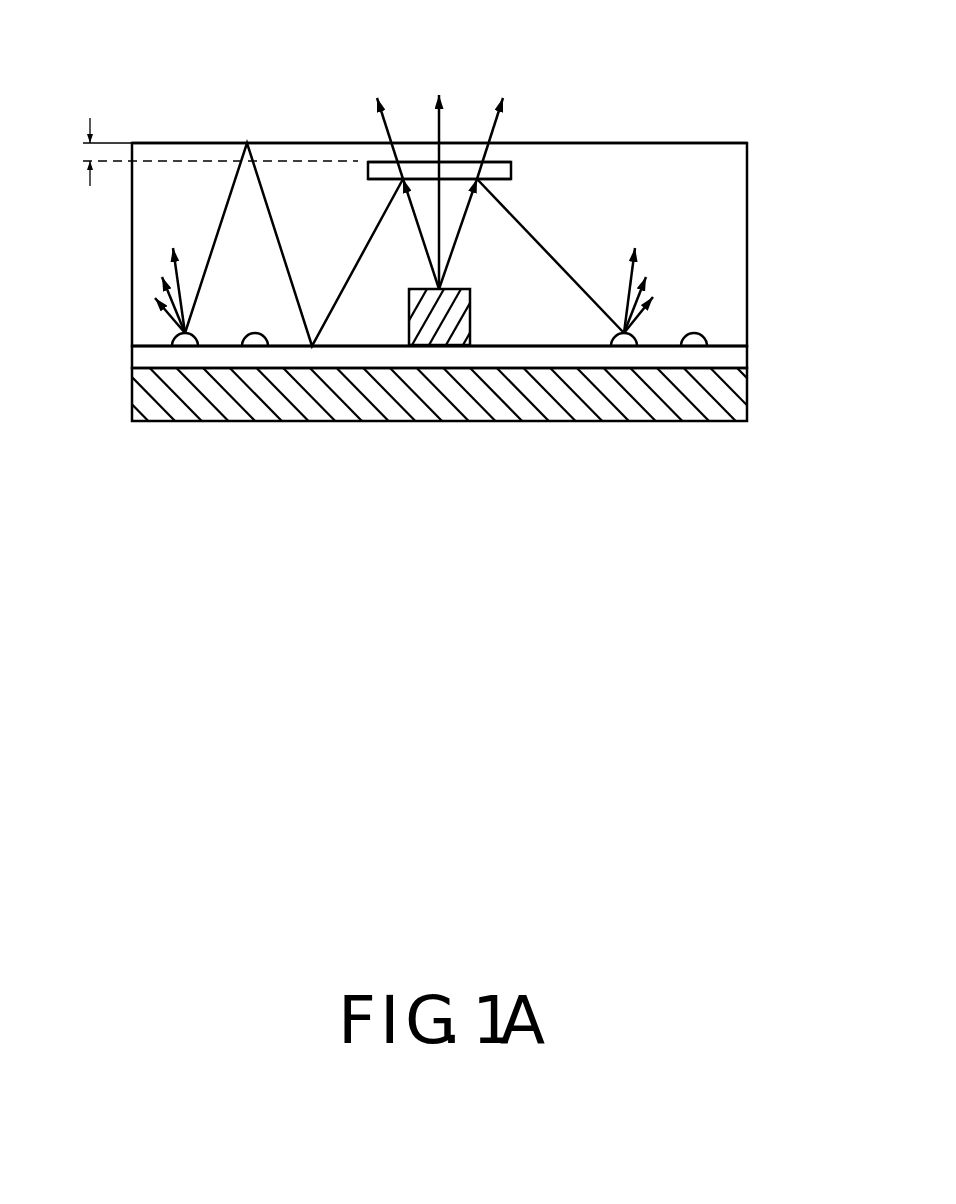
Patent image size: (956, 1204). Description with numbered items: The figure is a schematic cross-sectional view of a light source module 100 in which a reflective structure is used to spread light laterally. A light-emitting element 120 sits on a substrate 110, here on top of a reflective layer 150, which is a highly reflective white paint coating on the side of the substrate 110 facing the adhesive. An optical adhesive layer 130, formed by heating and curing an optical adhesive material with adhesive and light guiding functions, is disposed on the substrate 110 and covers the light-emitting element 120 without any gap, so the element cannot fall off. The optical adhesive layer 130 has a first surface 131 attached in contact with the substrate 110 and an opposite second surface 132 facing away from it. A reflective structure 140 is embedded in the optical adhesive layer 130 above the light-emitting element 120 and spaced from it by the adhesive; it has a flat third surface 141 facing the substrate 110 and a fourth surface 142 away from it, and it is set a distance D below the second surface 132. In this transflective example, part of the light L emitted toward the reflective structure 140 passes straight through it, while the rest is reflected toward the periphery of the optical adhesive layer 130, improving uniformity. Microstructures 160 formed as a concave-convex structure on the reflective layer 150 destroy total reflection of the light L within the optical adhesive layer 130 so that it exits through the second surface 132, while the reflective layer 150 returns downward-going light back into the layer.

The light source module 100 is at (99, 52).
The substrate 110 is at (725, 395).
The light-emitting element 120 is at (437, 346).
The optical adhesive layer 130 is at (725, 163).
The first surface 131 is at (213, 343).
The second surface 132 is at (190, 141).
The reflective structure 140 is at (512, 172).
The third surface 141 is at (506, 184).
The fourth surface 142 is at (502, 161).
The reflective layer 150 is at (725, 355).
The microstructures 160 is at (168, 335).
The light L is at (557, 268).
The distance D is at (210, 152).